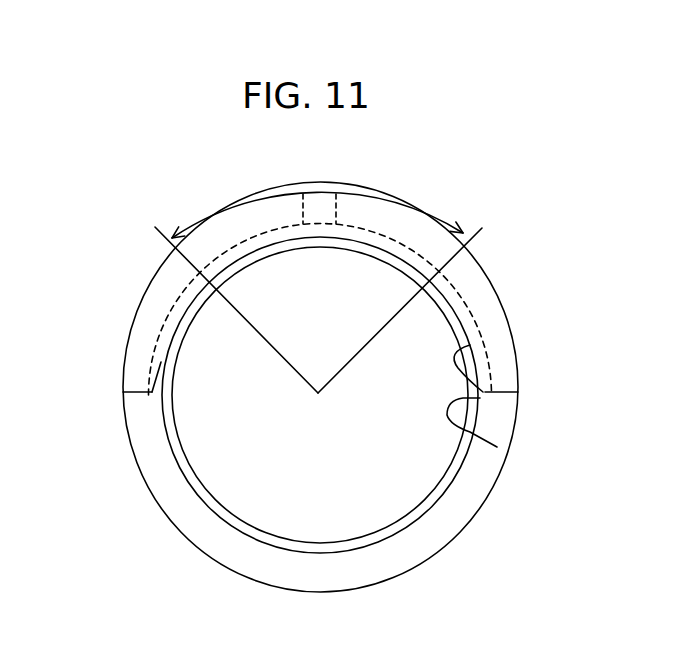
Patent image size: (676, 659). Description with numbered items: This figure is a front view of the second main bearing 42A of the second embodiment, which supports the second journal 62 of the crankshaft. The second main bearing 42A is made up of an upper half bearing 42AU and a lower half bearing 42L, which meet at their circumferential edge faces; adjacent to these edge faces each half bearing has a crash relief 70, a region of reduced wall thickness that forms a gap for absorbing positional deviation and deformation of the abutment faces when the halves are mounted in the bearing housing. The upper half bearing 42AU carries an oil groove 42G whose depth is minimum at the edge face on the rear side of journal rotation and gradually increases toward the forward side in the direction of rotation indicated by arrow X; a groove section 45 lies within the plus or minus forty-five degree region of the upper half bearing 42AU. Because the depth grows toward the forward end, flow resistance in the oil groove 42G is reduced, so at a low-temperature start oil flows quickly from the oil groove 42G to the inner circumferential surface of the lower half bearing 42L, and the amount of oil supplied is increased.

The second main bearing 42A is at (183, 260).
The upper half bearing 42AU is at (157, 304).
The lower half bearing 42L is at (132, 427).
The oil groove 42G is at (287, 232).
The groove section 45 is at (323, 204).
The second journal 62 is at (405, 473).
The crash relief 70 is at (470, 345).
The arrow indicating direction of rotation X is at (419, 330).